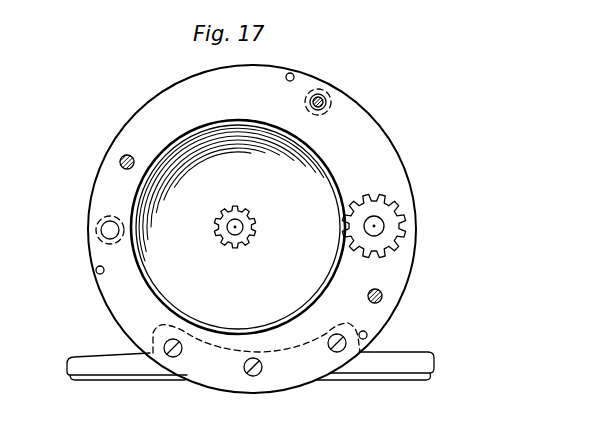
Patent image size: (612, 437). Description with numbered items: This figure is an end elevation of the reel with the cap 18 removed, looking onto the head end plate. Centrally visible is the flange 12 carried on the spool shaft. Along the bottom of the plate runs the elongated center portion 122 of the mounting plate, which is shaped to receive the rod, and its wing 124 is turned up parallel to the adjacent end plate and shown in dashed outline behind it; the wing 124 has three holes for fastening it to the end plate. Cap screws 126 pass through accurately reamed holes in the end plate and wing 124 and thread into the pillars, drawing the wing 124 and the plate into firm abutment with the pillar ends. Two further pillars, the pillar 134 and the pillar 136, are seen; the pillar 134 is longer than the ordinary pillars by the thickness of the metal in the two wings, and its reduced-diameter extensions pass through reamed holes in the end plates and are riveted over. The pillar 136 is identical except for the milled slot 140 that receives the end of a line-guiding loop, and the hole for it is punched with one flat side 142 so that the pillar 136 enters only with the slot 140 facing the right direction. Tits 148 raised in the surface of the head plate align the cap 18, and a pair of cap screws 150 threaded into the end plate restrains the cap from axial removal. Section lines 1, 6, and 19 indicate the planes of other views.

The section line 1- 1 is at (315, 330).
The section line 6- 6 is at (63, 268).
The flange 12 is at (238, 227).
The cap 18 is at (268, 407).
The section line 19- 19 is at (137, 385).
The elongated center portion 122 is at (95, 374).
The wing 124 is at (358, 324).
The cap screw 126 is at (177, 357).
The pillar 134 is at (101, 226).
The pillar 136 is at (309, 99).
The milled slot 140 is at (327, 98).
The flat side 142 is at (327, 110).
The tit 148 is at (293, 75).
The cap screw 150 is at (120, 157).